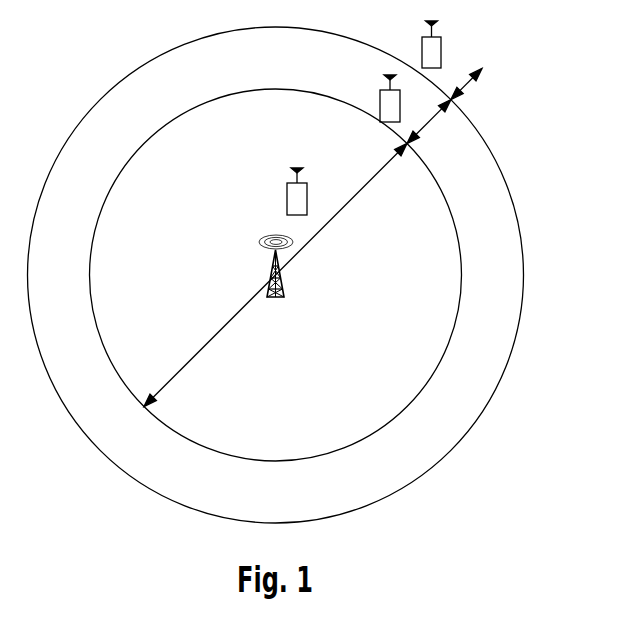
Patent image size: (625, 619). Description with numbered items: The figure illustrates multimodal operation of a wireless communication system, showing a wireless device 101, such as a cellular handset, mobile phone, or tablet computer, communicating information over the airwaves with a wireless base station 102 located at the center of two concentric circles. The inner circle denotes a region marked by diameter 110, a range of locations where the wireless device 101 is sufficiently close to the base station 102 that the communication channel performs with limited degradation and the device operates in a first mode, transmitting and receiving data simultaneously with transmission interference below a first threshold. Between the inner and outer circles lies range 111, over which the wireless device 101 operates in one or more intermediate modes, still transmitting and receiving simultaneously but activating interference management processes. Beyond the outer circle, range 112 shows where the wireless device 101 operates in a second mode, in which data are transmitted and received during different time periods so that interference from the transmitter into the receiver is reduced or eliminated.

The wireless device 101 is at (286, 191).
The wireless base station 102 is at (267, 270).
The diameter 110 is at (218, 337).
The range 111 is at (427, 128).
The range 112 is at (478, 81).